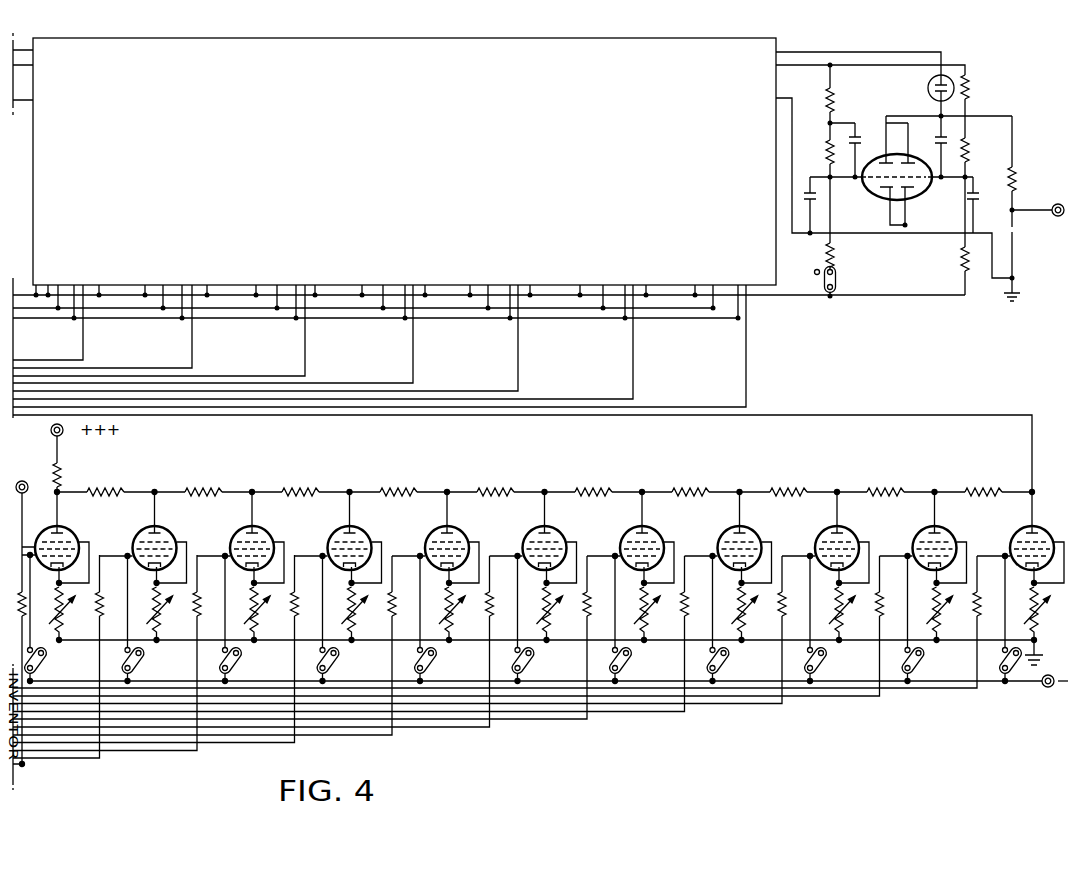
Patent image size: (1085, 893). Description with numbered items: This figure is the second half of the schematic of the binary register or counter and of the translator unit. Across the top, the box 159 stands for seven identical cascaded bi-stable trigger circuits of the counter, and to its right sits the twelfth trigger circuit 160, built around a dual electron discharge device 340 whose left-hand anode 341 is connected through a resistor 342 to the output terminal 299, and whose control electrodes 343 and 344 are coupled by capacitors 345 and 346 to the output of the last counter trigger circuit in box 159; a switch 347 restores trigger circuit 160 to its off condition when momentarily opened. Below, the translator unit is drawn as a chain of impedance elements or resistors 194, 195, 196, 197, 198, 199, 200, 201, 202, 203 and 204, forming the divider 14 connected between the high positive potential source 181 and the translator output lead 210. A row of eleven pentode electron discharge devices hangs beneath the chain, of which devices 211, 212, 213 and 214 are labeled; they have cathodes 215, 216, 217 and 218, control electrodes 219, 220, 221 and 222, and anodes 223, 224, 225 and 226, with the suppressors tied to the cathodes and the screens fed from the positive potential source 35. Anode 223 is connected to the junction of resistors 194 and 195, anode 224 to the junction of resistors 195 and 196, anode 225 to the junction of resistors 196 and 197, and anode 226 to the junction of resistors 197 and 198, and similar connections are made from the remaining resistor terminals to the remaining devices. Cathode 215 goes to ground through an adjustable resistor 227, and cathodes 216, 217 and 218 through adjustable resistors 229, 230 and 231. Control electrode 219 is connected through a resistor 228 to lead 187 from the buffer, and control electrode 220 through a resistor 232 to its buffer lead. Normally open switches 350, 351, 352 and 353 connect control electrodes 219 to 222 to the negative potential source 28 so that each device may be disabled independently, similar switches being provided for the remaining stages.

The voltage divider 14 is at (507, 445).
The negative potential source 28 is at (1047, 676).
The positive potential source 35 is at (27, 493).
The box 159 is at (257, 265).
The trigger circuit 160 is at (902, 92).
The high positive potential source 181 is at (51, 436).
The lead 187 is at (24, 766).
The resistor 194 is at (65, 472).
The resistor 195 is at (107, 485).
The resistor 196 is at (202, 485).
The resistor 197 is at (310, 462).
The resistor 198 is at (410, 462).
The resistor 199 is at (507, 462).
The resistor 200 is at (610, 462).
The resistor 201 is at (705, 462).
The resistor 202 is at (800, 462).
The resistor 203 is at (893, 462).
The resistor 204 is at (983, 485).
The translator output lead 210 is at (1005, 413).
The electron discharge device 211 is at (68, 536).
The electron discharge device 212 is at (166, 535).
The electron discharge device 213 is at (267, 533).
The electron discharge device 214 is at (363, 535).
The cathode 215 is at (57, 570).
The cathode 216 is at (152, 570).
The cathode 217 is at (250, 570).
The cathode 218 is at (345, 568).
The control electrode 219 is at (70, 562).
The control electrode 220 is at (164, 564).
The control electrode 221 is at (264, 567).
The control electrode 222 is at (363, 557).
The anode 223 is at (60, 530).
The anode 224 is at (149, 532).
The anode 225 is at (248, 530).
The anode 226 is at (344, 533).
The adjustable resistor 227 is at (68, 606).
The resistor 228 is at (25, 608).
The adjustable resistor 229 is at (163, 615).
The adjustable resistor 230 is at (252, 607).
The adjustable resistor 231 is at (343, 615).
The resistor 232 is at (105, 603).
The output terminal 299 is at (1064, 216).
The dual electron discharge device 340 is at (872, 196).
The left-hand anode 341 is at (882, 160).
The resistor 342 is at (1020, 175).
The control electrode 343 is at (868, 188).
The control electrode 344 is at (922, 182).
The capacitor 345 is at (817, 205).
The capacitor 346 is at (988, 196).
The switch 347 is at (834, 270).
The switch 350 is at (47, 660).
The switch 351 is at (137, 660).
The switch 352 is at (238, 660).
The switch 353 is at (335, 658).